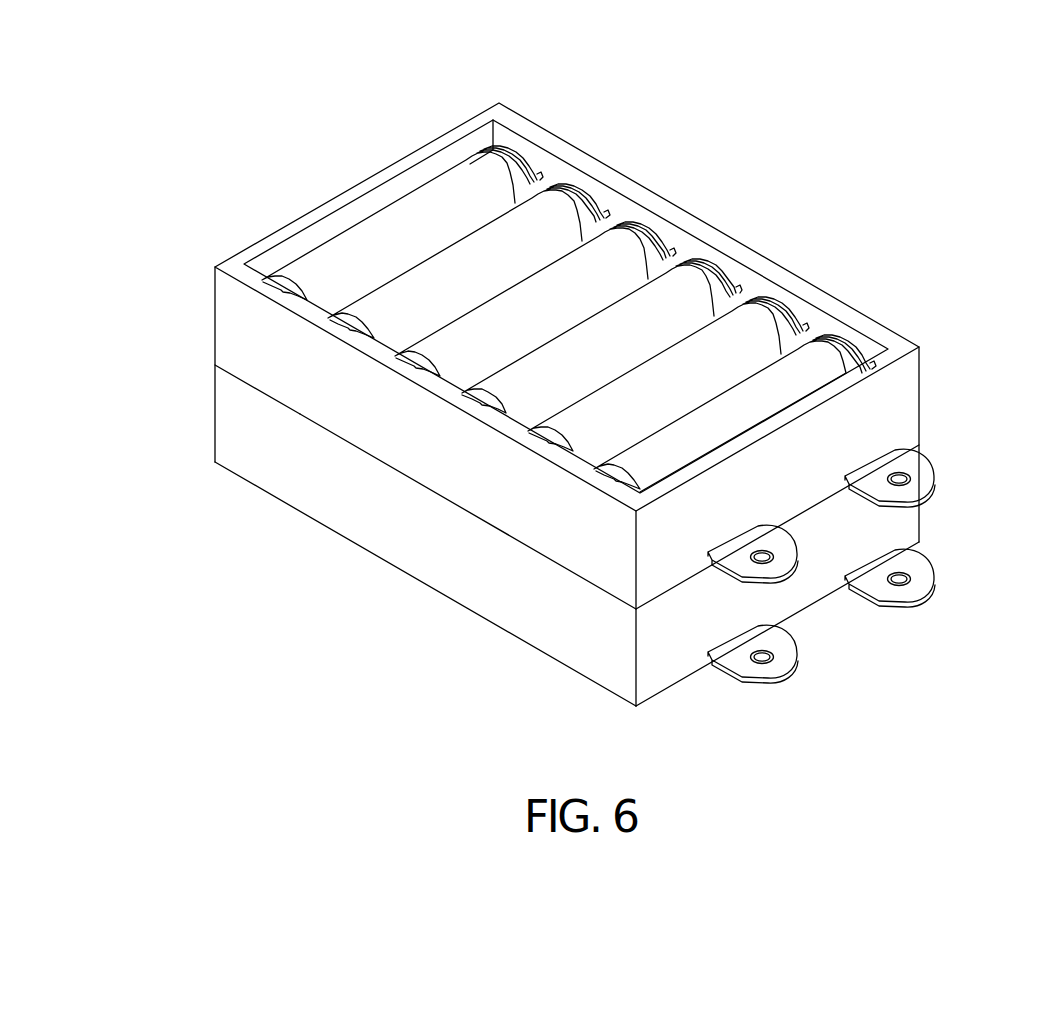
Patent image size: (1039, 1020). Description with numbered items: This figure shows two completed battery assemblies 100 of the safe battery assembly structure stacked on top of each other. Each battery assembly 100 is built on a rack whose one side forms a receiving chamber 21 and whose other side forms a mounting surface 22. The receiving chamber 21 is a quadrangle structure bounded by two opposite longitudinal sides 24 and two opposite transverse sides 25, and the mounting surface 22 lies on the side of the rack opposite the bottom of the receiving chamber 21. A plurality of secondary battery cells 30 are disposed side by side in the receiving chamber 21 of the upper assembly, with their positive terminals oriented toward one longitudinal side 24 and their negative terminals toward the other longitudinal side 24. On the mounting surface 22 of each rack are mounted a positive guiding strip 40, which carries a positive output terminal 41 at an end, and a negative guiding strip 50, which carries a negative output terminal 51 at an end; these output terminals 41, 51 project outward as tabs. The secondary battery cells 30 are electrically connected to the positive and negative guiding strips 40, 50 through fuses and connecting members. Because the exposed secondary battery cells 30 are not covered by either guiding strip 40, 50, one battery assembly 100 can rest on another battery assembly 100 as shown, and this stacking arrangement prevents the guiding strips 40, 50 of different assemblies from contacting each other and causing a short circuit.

The battery assembly 100 is at (578, 428).
The receiving chamber 21 is at (750, 292).
The mounting surface 22 is at (308, 420).
The longitudinal sides 24 is at (228, 318).
The transverse sides 25 is at (908, 383).
The secondary battery cells 30 is at (621, 260).
The positive guiding strip 40 is at (895, 448).
The positive output terminal 41 is at (930, 468).
The negative guiding strip 50 is at (735, 547).
The negative output terminal 51 is at (785, 562).